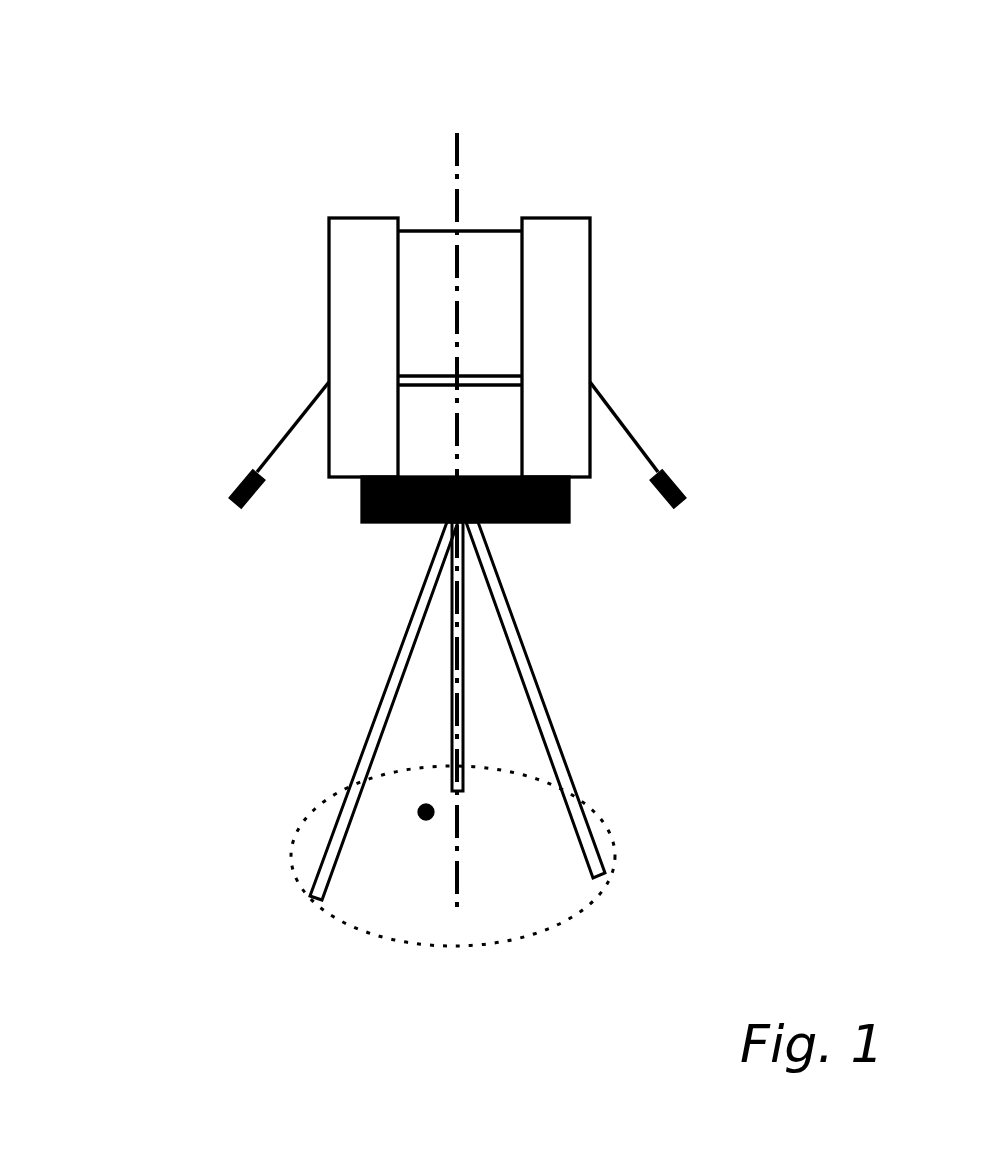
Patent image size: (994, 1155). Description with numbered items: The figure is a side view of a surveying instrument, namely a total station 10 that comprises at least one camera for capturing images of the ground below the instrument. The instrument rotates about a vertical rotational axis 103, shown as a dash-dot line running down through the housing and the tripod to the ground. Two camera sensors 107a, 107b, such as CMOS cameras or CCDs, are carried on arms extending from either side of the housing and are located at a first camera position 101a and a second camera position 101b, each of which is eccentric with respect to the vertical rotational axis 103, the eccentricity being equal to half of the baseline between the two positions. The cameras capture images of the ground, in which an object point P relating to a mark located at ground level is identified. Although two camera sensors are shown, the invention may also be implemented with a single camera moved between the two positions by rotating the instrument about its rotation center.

The total station 10 is at (245, 160).
The vertical rotational axis 103 is at (455, 205).
The camera sensor 107a is at (237, 482).
The camera sensor 107b is at (678, 482).
The first camera position 101a is at (213, 489).
The second camera position 101b is at (710, 495).
The object point P is at (423, 821).